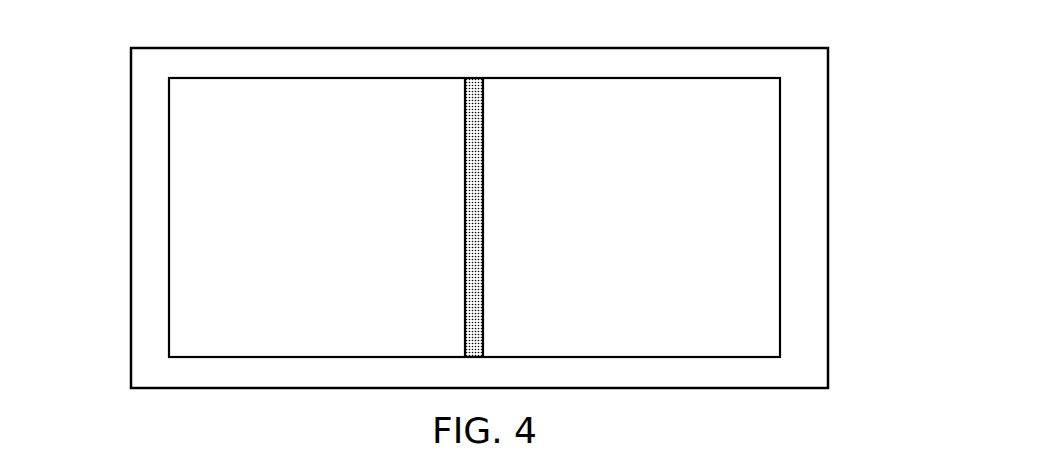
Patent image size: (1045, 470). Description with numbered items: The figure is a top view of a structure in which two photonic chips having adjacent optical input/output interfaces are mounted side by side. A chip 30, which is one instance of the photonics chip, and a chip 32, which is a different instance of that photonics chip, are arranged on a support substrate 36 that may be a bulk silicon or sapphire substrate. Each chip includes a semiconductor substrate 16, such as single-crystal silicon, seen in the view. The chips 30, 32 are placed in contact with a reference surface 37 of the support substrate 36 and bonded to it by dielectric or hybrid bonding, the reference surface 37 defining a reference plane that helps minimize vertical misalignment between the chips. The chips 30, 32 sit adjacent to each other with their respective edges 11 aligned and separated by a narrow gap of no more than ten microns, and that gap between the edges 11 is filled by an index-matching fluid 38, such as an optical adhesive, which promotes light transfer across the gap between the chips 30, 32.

The chip 30 is at (194, 68).
The chip 32 is at (751, 62).
The support substrate 36 is at (806, 127).
The reference surface 37 is at (820, 272).
The index-matching fluid 38 is at (476, 185).
The semiconductor substrate 16 is at (223, 220).
The edge 11 is at (464, 332).